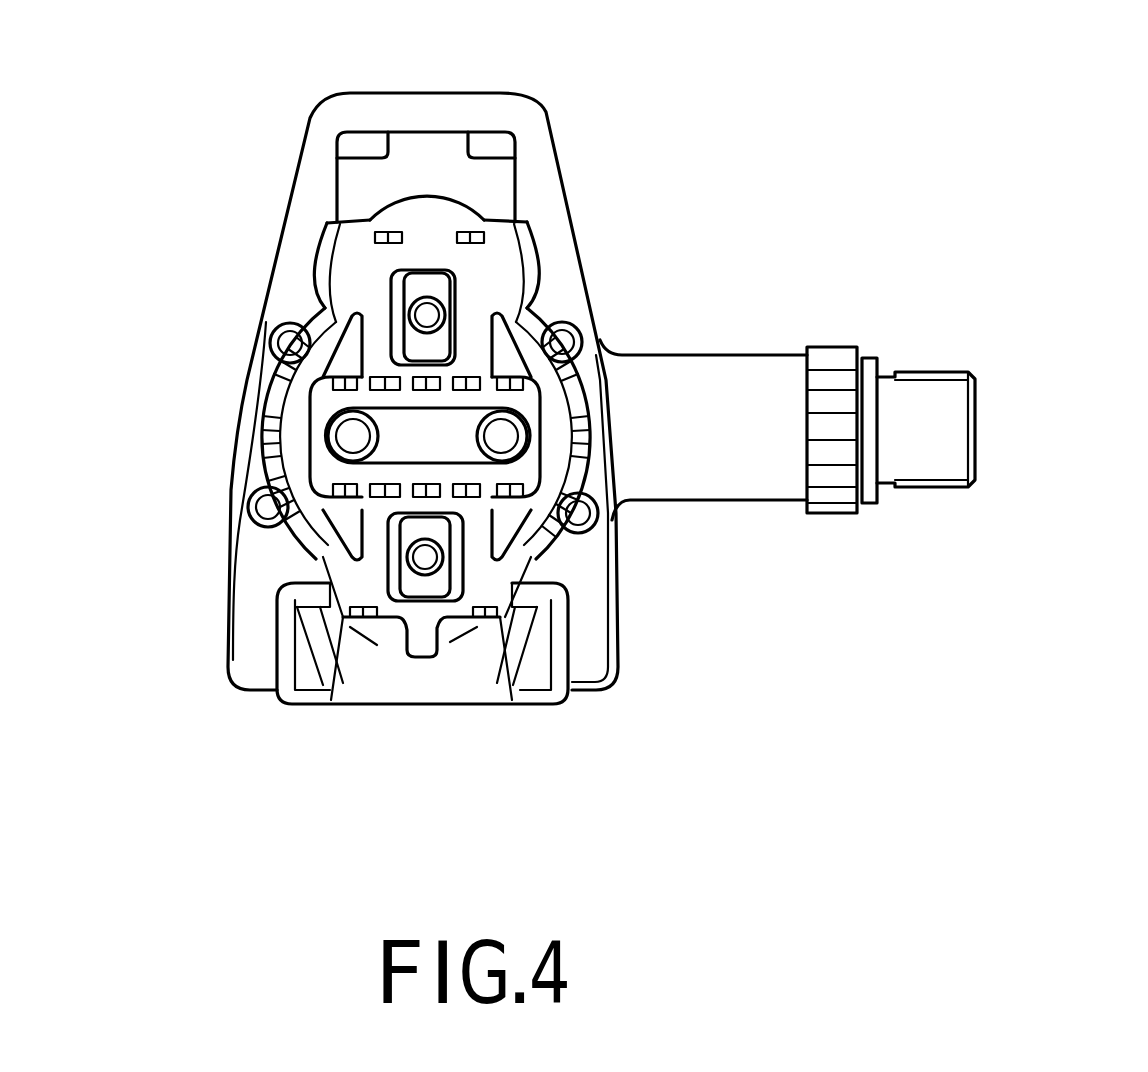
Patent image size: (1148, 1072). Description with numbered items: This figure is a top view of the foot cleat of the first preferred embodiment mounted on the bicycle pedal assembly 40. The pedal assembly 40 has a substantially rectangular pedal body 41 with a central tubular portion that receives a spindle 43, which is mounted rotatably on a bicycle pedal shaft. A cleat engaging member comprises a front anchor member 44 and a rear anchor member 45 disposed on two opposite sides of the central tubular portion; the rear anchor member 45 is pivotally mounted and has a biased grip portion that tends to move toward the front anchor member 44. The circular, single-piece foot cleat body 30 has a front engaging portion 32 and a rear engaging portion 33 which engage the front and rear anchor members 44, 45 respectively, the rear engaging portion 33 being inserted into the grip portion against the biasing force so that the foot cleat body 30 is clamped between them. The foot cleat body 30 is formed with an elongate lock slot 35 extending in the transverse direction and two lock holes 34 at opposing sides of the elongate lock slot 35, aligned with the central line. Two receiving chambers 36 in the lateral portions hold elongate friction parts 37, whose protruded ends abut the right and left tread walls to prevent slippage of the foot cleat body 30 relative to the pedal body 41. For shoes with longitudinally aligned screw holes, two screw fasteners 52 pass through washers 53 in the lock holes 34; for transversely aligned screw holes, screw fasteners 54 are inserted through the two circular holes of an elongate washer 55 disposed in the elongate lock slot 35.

The foot cleat body 30 is at (358, 367).
The front engaging portion 32 is at (422, 213).
The rear engaging portion 33 is at (432, 643).
The lock holes 34 is at (465, 313).
The elongate lock slot 35 is at (298, 400).
The receiving chambers 36 is at (292, 462).
The elongate friction parts 37 is at (290, 407).
The bicycle pedal assembly 40 is at (704, 501).
The pedal body 41 is at (598, 300).
The spindle 43 is at (925, 468).
The front anchor member 44 is at (503, 193).
The rear anchor member 45 is at (397, 692).
The screw fasteners 52 is at (395, 287).
The washers 53 is at (423, 312).
The screw fasteners 54 is at (276, 327).
The elongate washer 55 is at (393, 440).